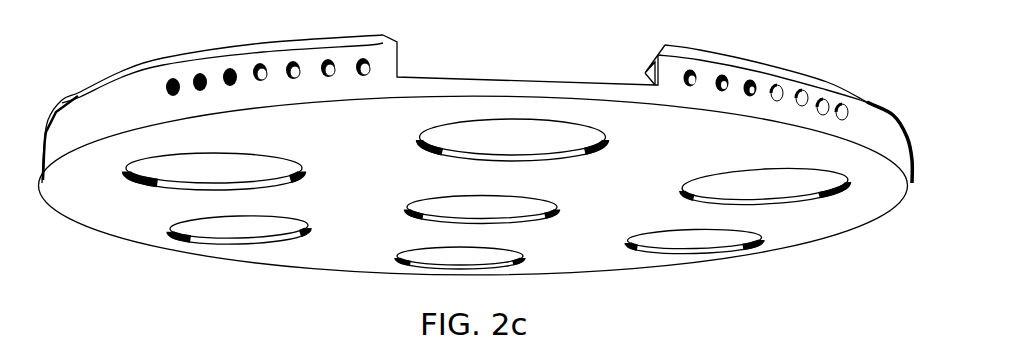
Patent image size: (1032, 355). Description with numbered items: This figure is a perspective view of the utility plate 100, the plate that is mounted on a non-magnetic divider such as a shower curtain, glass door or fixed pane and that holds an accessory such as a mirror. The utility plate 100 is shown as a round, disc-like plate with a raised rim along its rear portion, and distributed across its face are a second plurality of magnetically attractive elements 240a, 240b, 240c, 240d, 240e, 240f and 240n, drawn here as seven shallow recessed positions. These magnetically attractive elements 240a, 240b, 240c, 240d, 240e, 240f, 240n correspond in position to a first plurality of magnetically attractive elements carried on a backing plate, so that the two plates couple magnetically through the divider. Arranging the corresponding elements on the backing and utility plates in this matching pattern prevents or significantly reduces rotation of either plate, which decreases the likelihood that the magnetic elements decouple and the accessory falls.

The utility plate 100 is at (476, 149).
The magnetically attractive element 240a is at (513, 140).
The magnetically attractive element 240b is at (765, 187).
The magnetically attractive element 240c is at (214, 171).
The magnetically attractive element 240d is at (482, 210).
The magnetically attractive element 240e is at (694, 241).
The magnetically attractive element 240f is at (239, 230).
The magnetically attractive element 240n is at (460, 258).